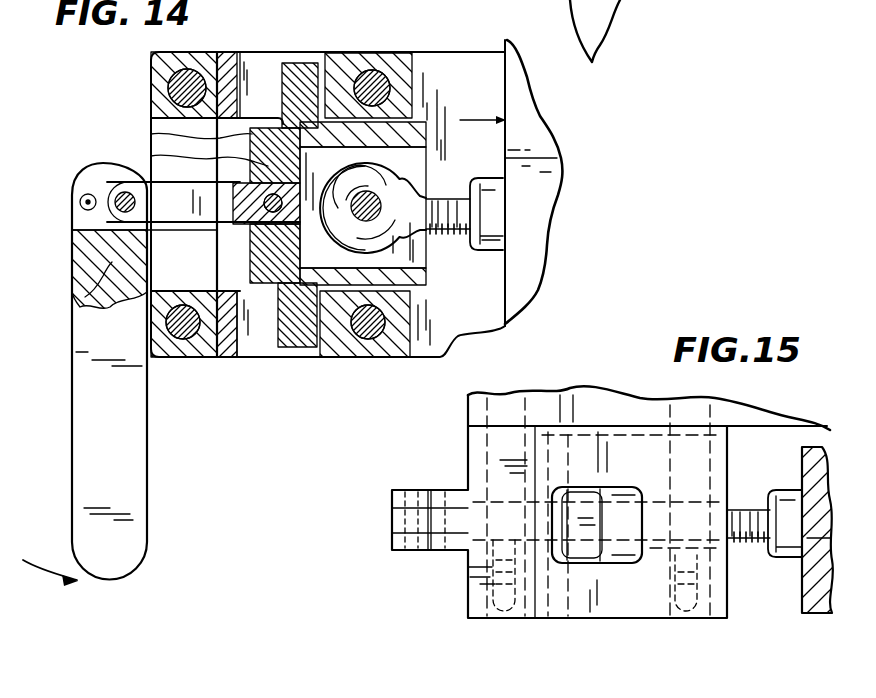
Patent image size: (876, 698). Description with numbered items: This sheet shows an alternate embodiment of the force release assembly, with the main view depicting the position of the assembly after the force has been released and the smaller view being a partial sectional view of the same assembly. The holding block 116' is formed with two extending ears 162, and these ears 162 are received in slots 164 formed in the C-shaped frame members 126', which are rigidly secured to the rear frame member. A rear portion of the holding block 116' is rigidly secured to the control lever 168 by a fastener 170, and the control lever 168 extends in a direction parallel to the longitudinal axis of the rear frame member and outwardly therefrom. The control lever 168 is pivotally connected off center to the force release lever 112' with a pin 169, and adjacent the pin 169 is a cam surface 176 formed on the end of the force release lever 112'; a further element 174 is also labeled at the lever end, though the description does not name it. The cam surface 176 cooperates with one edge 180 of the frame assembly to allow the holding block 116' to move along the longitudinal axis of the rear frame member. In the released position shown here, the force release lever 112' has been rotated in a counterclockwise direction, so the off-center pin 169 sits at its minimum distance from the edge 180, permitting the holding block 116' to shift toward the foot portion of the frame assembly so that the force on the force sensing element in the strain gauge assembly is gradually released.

The force release lever 112' is at (88, 385).
The holding block 116' is at (178, 129).
The C-shaped frame members 126' is at (378, 345).
The extending ears 162 is at (300, 63).
The slots 164 is at (263, 70).
The control lever 168 is at (85, 299).
The pin 169 is at (177, 212).
The fastener 170 is at (151, 154).
The pivot hole 174 is at (72, 212).
The cam surface 176 is at (80, 175).
The edge 180 is at (150, 88).